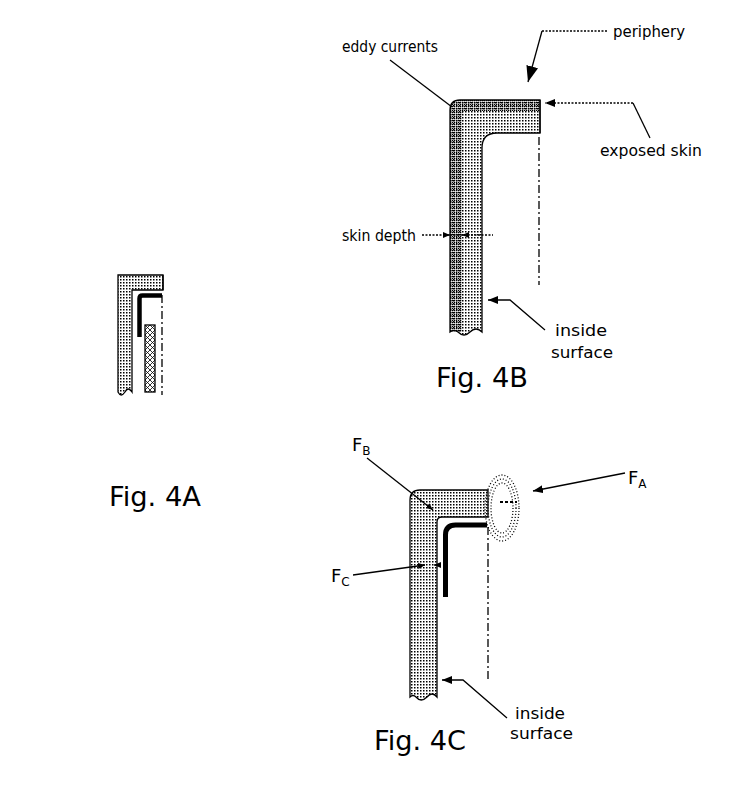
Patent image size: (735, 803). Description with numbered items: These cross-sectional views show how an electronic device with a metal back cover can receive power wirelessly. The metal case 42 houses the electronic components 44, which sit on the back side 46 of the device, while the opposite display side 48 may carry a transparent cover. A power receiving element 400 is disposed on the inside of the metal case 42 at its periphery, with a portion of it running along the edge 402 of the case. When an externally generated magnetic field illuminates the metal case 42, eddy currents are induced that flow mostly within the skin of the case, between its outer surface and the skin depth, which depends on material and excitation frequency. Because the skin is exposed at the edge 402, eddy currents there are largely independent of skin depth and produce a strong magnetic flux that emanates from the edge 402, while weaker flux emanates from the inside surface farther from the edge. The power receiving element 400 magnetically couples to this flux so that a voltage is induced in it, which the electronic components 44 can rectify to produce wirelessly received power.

In FIG. 4A, the metal case 42 is at (123, 275).
In FIG. 4B, the metal case 42 is at (450, 309).
In FIG. 4C, the metal case 42 is at (410, 657).
In FIG. 4A, the electronic components 44 is at (152, 392).
In FIG. 4A, the back side 46 is at (108, 373).
In FIG. 4A, the display side 48 is at (168, 373).
In FIG. 4B, the display side 48 is at (545, 232).
In FIG. 4C, the display side 48 is at (492, 668).
In FIG. 4A, the power receiving element 400 is at (143, 307).
In FIG. 4C, the power receiving element 400 is at (452, 570).
In FIG. 4A, the edge 402 is at (165, 283).
In FIG. 4B, the edge 402 is at (545, 120).